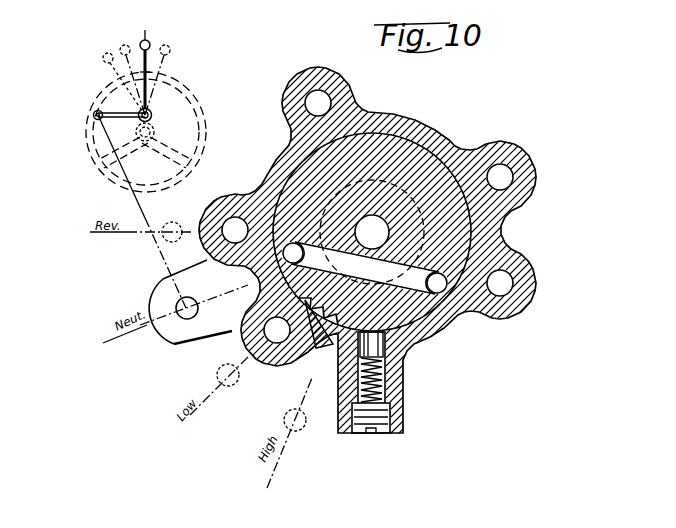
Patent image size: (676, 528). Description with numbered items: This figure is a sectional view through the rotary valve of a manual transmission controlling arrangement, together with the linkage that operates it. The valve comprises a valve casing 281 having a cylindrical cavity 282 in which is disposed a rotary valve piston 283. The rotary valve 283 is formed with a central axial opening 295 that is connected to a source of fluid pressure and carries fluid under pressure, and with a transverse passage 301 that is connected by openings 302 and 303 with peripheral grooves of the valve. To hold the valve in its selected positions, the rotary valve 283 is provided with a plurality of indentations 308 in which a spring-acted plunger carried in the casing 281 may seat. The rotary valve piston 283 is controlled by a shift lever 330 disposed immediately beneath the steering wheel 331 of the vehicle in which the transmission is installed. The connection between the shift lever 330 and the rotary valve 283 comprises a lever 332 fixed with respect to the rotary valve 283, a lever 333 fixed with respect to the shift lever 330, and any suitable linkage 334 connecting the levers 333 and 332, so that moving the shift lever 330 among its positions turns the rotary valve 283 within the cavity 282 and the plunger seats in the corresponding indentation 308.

The valve casing 281 is at (428, 121).
The cylindrical cavity 282 is at (381, 131).
The rotary valve piston 283 is at (436, 160).
The axial opening 295 is at (385, 241).
The transverse passage 301 is at (383, 277).
The opening 302 is at (303, 254).
The opening 303 is at (438, 318).
The indentations 308 is at (333, 333).
The shift lever 330 is at (150, 52).
The steering wheel 331 is at (200, 100).
The lever 332 is at (172, 338).
The lever 333 is at (112, 111).
The linkage 334 is at (133, 214).